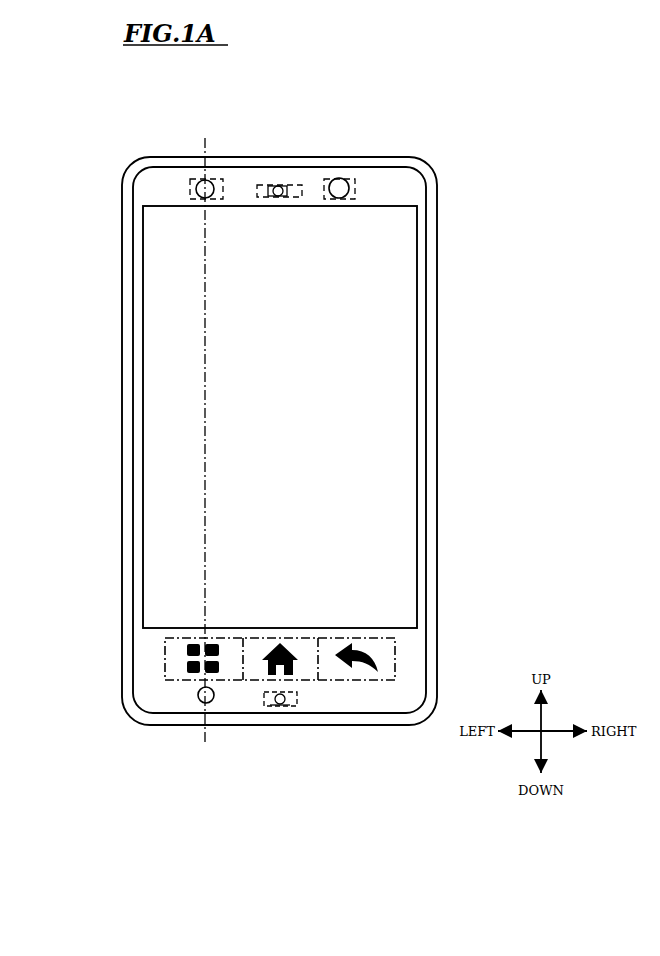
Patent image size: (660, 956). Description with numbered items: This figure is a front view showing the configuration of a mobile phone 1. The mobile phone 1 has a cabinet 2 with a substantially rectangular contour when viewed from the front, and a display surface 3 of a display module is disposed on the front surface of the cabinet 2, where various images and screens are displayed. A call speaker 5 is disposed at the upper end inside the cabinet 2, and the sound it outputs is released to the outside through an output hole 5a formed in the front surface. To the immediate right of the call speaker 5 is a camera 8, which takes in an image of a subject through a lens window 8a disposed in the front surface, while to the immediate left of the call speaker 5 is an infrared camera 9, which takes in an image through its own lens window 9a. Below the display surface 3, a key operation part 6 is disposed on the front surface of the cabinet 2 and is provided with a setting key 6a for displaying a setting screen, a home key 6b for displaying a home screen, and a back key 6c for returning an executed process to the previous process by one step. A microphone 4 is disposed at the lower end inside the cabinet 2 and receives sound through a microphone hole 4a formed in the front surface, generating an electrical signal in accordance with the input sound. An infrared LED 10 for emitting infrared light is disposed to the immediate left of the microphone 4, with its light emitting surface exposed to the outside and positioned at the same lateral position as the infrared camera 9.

The mobile phone 1 is at (430, 158).
The cabinet 2 is at (437, 250).
The display surface 3 is at (177, 293).
The microphone 4 is at (267, 710).
The microphone hole 4a is at (282, 708).
The call speaker 5 is at (299, 185).
The output hole 5a is at (278, 185).
The key operation part 6 is at (342, 679).
The setting key 6a is at (196, 635).
The home key 6b is at (309, 635).
The back key 6c is at (395, 650).
The camera 8 is at (357, 196).
The lens window 8a is at (340, 179).
The infrared camera 9 is at (192, 180).
The lens window 9a is at (205, 180).
The infrared LED 10 is at (200, 701).